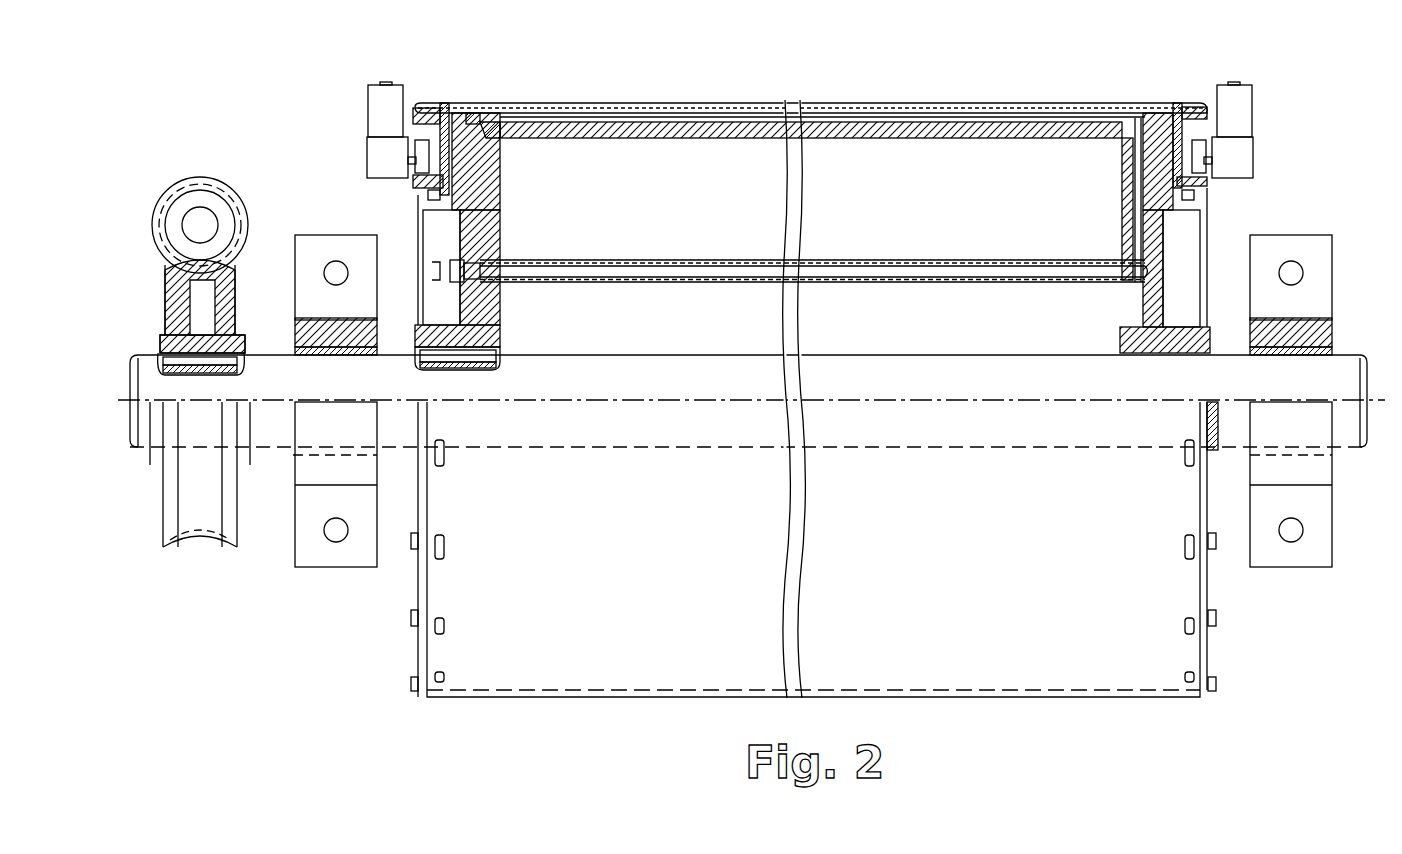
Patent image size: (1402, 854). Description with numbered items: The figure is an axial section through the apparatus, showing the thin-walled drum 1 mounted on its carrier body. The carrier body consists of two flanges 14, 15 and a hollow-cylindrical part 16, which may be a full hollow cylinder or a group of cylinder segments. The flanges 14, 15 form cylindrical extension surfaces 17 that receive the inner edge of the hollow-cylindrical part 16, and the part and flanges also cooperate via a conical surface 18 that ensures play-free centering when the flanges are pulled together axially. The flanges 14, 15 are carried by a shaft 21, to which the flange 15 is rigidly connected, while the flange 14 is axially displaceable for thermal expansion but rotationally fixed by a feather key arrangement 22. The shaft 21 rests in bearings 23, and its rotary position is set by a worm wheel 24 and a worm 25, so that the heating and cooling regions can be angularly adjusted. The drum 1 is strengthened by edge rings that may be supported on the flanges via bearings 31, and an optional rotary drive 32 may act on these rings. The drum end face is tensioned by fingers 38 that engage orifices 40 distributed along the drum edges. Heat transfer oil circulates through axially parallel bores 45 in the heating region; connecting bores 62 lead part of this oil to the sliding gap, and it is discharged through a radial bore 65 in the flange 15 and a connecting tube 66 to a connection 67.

The drum 1 is at (541, 103).
The flange 14 is at (490, 214).
The flange 15 is at (1150, 198).
The hollow-cylindrical part 16 is at (811, 182).
The cylindrical extension surface 17 is at (490, 133).
The conical surface 18 is at (464, 124).
The shaft 21 is at (875, 366).
The feather key arrangement 22 is at (500, 335).
The bearing 23 is at (308, 427).
The worm wheel 24 is at (214, 520).
The worm 25 is at (205, 212).
The bearing 31 is at (428, 196).
The rotary drive 32 is at (378, 110).
The finger 38 is at (1195, 550).
The orifice 40 is at (1200, 578).
The axially parallel bore 45 is at (670, 121).
The connecting bore 62 is at (634, 105).
The radial bore 65 is at (1136, 161).
The connecting tube 66 is at (875, 268).
The connection 67 is at (448, 265).